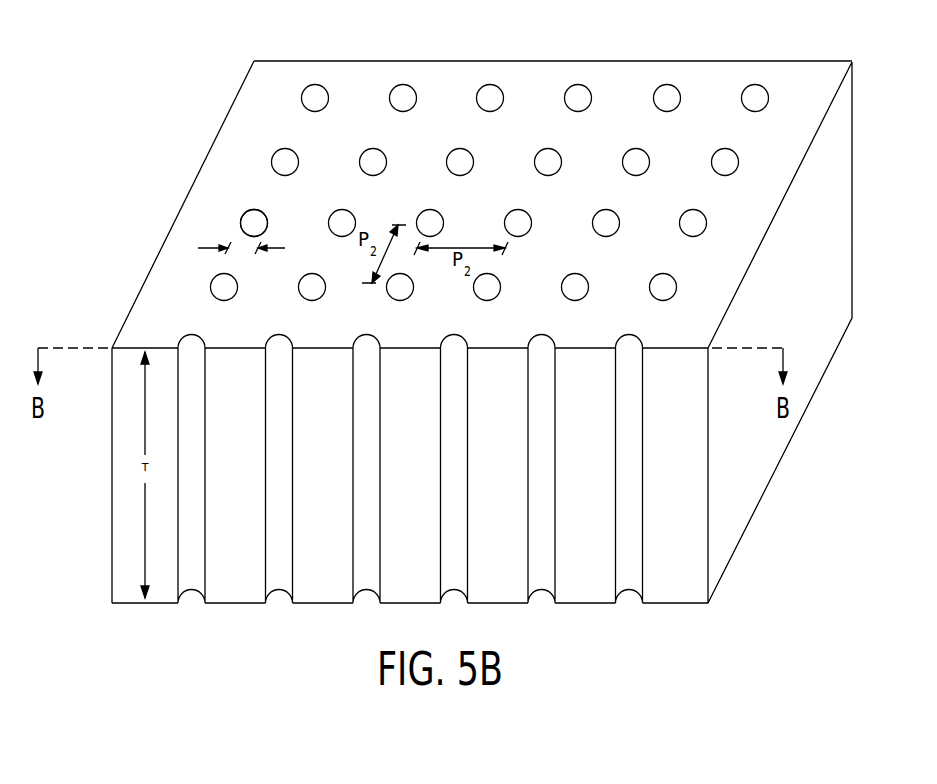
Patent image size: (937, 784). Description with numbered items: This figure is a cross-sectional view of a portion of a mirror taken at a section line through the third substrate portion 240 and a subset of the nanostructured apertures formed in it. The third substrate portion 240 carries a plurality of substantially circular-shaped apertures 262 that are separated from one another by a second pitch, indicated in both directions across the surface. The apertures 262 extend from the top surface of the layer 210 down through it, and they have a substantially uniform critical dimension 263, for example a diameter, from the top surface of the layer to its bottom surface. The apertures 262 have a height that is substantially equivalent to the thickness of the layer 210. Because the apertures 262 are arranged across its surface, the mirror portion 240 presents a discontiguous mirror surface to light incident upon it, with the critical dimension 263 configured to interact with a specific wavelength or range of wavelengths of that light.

The layer 210 is at (689, 486).
The third substrate portion 240 is at (530, 76).
The apertures 262 is at (250, 373).
The critical dimension 263 is at (262, 252).